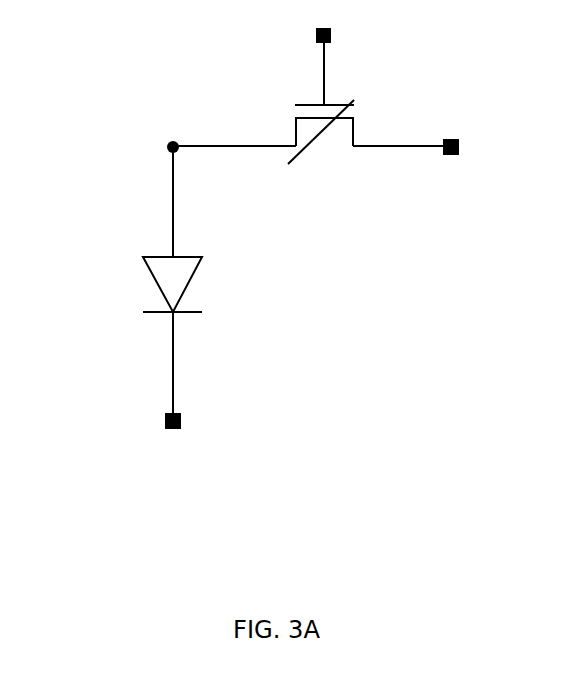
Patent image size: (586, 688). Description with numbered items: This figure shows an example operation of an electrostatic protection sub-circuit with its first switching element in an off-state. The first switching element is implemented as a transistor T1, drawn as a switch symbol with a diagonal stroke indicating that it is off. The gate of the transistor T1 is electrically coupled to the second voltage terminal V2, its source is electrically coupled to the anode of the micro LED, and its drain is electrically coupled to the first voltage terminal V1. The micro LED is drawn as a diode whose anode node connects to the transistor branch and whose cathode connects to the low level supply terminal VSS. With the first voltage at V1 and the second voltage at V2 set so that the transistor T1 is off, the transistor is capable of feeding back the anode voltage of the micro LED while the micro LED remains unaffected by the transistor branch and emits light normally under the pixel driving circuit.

The element anode is at (117, 146).
The element cathode is at (110, 394).
The transistor T1 is at (351, 103).
The first voltage terminal V1 is at (477, 146).
The second voltage terminal V2 is at (334, 21).
The micro LED is at (202, 284).
The low level supply voltage terminal VSS is at (188, 445).